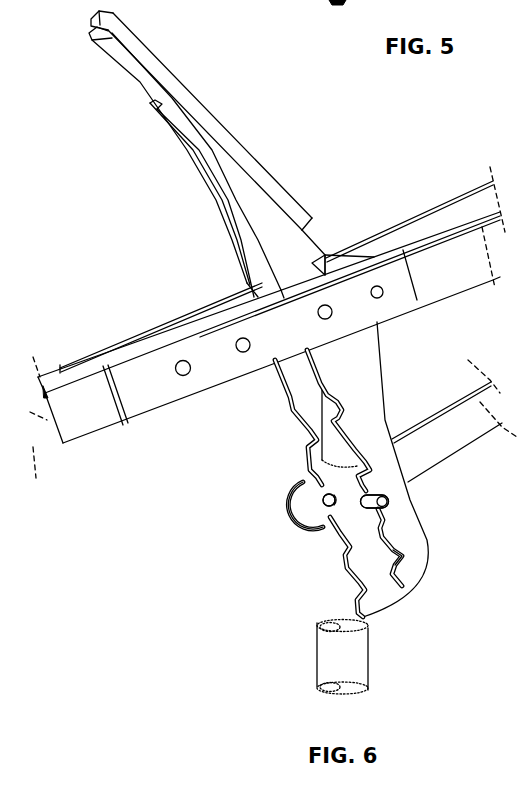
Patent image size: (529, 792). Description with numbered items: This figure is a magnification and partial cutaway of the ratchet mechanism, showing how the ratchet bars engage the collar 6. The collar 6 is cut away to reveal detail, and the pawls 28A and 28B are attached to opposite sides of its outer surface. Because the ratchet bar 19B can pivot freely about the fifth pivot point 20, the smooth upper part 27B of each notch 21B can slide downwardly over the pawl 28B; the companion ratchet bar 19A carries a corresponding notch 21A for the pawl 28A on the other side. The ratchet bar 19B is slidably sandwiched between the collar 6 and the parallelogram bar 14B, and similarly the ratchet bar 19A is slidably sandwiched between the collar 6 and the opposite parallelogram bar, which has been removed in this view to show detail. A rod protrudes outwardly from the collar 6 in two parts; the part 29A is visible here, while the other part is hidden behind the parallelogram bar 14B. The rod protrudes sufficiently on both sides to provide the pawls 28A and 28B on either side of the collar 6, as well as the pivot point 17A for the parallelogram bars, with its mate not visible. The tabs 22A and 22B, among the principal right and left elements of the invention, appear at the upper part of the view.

The collar 6 is at (365, 337).
The parallelogram bar 14B is at (485, 432).
The pivot point 17A is at (386, 503).
The ratchet bar 19A is at (357, 398).
The ratchet bar 19B is at (308, 396).
The fifth pivot point 20 is at (320, 310).
The notch 21A is at (333, 448).
The notch 21B is at (323, 501).
The tab 22A is at (173, 97).
The tab 22B is at (135, 43).
The smooth upper part 27B is at (310, 496).
The pawl 28A is at (408, 565).
The pawl 28B is at (325, 503).
The rod part 29A is at (436, 515).